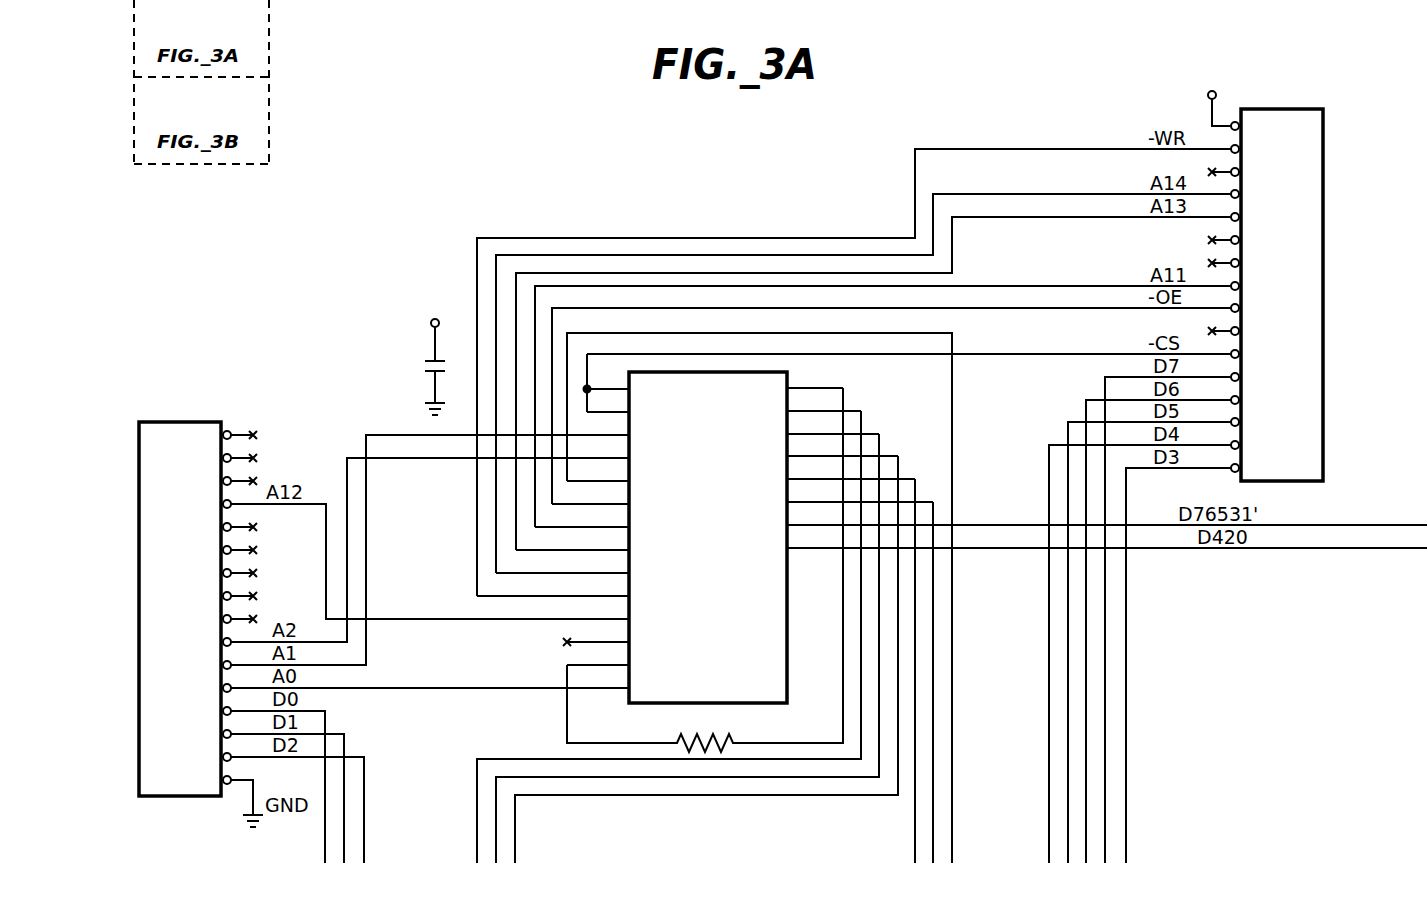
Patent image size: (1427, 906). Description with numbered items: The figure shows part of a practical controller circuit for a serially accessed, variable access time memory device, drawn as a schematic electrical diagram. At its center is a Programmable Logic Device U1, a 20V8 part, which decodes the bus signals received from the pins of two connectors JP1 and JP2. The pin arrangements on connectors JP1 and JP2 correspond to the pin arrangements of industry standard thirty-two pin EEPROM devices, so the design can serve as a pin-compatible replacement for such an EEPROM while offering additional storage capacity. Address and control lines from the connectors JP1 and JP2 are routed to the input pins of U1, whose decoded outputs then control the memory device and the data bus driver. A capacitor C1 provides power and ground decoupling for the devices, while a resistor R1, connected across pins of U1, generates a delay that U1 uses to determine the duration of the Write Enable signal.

The connector JP1 is at (198, 609).
The connector JP2 is at (1256, 271).
The Programmable Logic Device U1 is at (952, 528).
The capacitor C1 is at (416, 354).
The resistor R1 is at (705, 570).